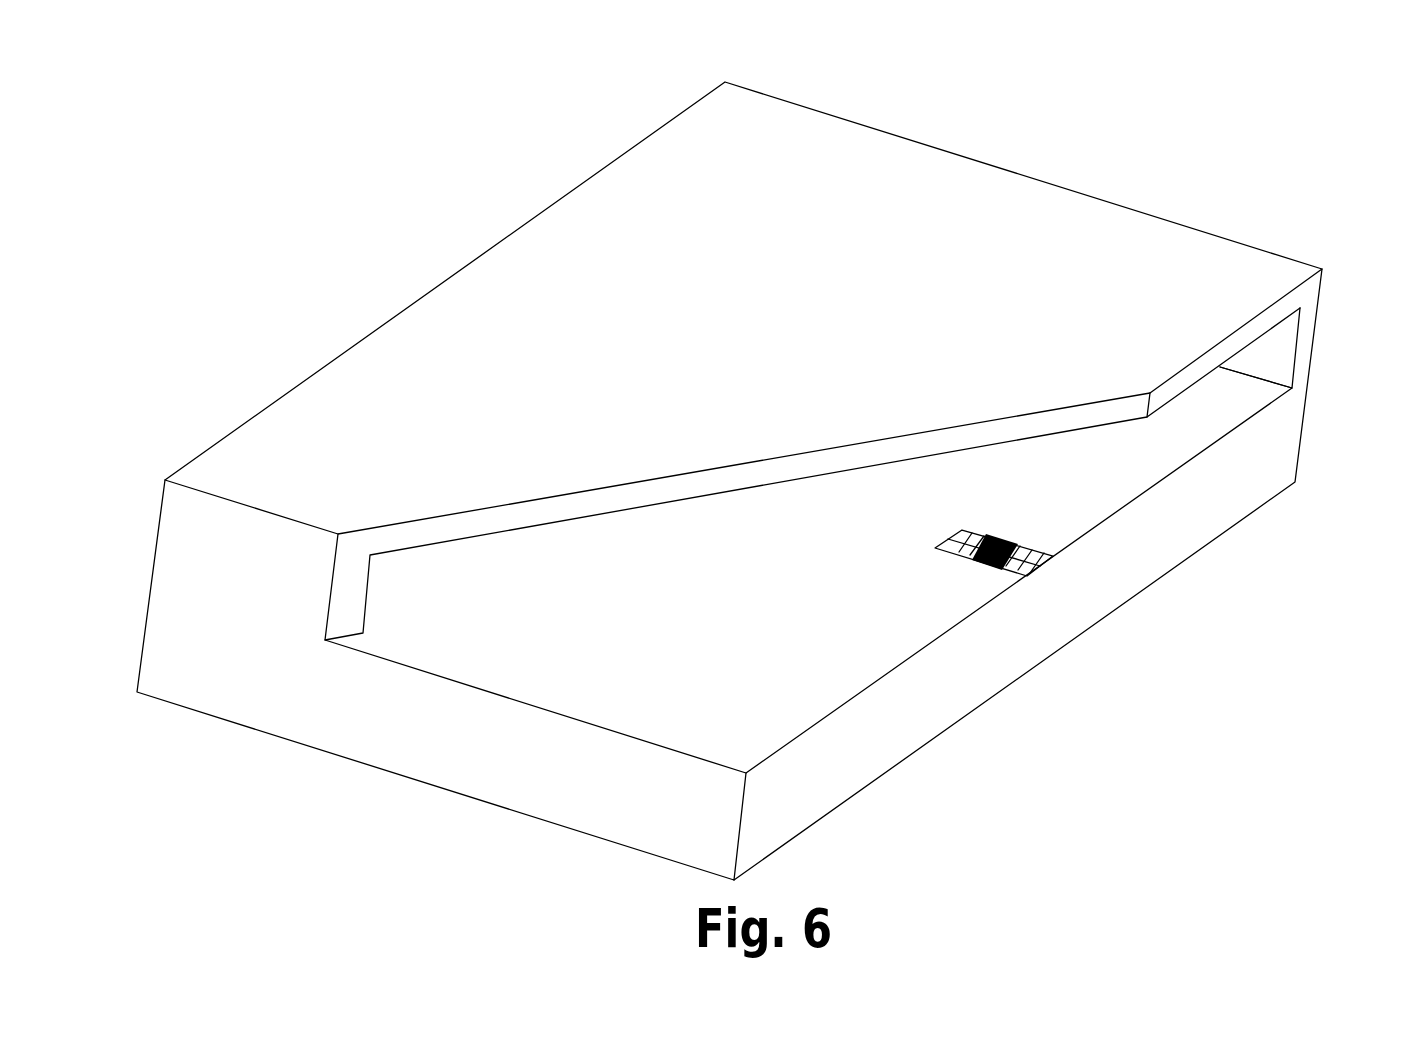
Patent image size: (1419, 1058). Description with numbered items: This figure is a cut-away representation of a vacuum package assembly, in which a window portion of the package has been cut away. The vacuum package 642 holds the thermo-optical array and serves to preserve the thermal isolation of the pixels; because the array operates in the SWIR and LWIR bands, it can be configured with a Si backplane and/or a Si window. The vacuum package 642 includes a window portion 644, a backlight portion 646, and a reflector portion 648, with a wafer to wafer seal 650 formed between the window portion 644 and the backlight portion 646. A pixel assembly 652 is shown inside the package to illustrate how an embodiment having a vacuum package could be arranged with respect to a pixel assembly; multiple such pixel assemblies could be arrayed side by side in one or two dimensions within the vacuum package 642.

The vacuum package 642 is at (761, 472).
The window portion 644 is at (452, 300).
The backlight portion 646 is at (155, 525).
The reflector portion 648 is at (955, 725).
The wafer to wafer seal 650 is at (1308, 327).
The pixel assembly 652 is at (1013, 545).